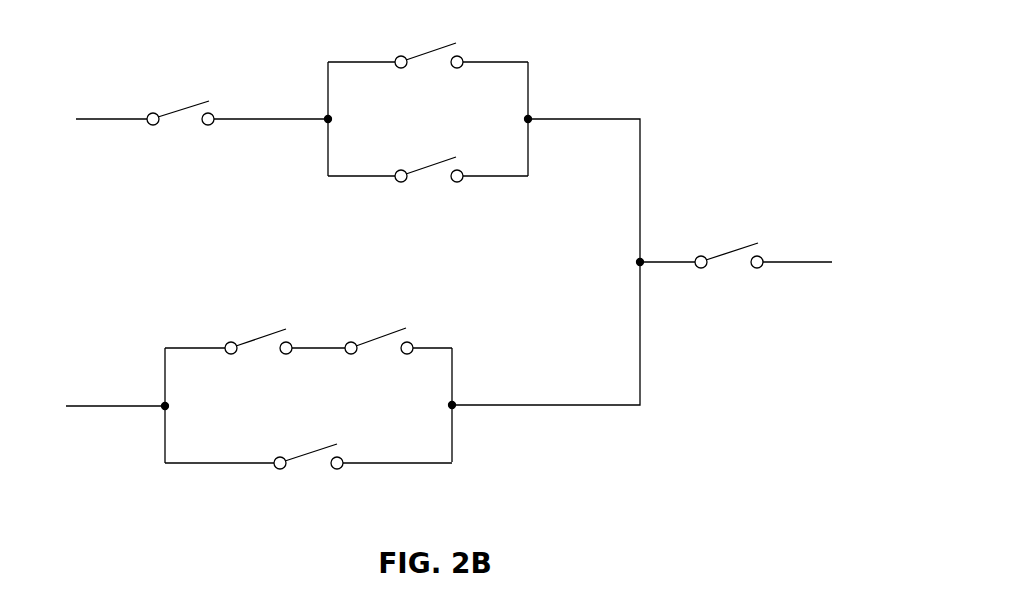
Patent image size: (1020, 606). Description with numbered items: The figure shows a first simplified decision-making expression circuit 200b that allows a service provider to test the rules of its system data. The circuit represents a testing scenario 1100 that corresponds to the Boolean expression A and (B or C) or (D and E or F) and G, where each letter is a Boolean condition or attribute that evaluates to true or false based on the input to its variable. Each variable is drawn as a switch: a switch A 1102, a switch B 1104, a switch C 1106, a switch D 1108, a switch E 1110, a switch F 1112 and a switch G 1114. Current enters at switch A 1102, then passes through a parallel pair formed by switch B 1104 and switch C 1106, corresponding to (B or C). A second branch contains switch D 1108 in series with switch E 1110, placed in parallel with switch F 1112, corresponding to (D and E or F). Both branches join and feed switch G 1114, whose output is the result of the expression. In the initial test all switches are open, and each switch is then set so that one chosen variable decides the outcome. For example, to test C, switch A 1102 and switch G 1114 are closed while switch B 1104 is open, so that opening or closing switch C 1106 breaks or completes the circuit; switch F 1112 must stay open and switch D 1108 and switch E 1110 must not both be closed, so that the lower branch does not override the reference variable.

The switch circuit arrangement 200b is at (452, 277).
The testing scenario 1100 is at (658, 462).
The switch A 1102 is at (171, 175).
The switch B 1104 is at (425, 106).
The switch C 1106 is at (402, 210).
The switch D 1108 is at (245, 390).
The switch E 1110 is at (386, 390).
The switch F 1112 is at (282, 498).
The switch G 1114 is at (728, 310).